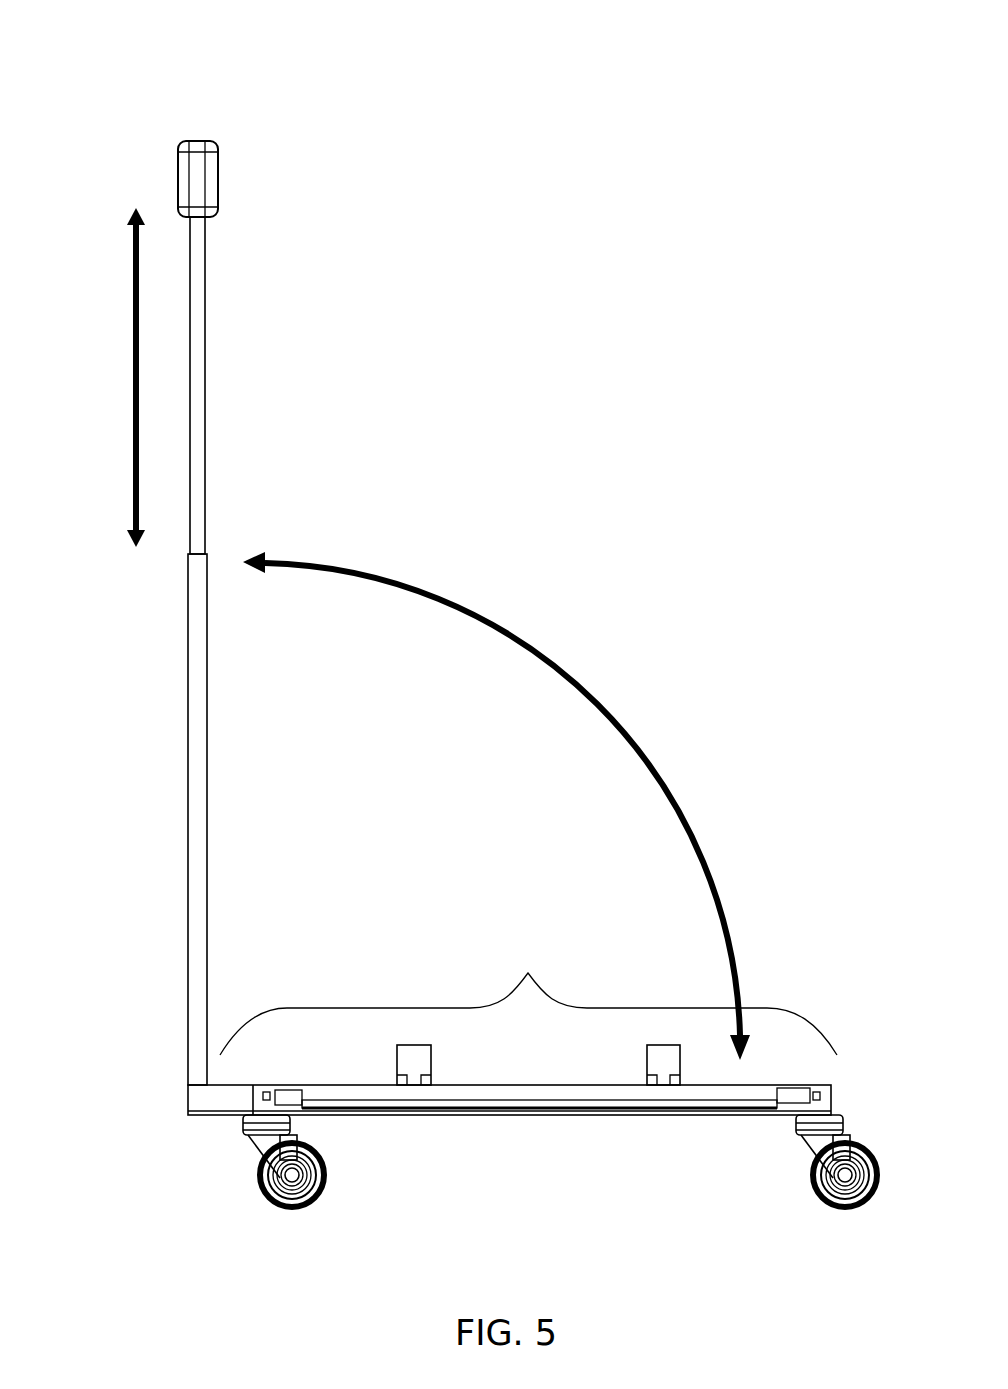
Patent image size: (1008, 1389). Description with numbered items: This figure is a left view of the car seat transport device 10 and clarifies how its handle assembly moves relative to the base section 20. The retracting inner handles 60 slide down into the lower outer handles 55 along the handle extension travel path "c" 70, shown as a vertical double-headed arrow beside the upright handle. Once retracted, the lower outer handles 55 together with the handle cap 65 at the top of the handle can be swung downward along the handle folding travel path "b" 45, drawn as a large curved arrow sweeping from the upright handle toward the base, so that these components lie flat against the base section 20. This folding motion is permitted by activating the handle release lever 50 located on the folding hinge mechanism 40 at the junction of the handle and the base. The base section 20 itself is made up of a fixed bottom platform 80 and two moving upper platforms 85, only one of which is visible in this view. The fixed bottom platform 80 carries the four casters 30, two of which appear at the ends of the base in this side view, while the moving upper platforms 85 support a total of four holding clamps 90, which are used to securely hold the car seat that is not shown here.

The car seat transport device 10 is at (126, 181).
The base section 20 is at (528, 1002).
The casters 30 is at (290, 1180).
The folding hinge mechanism 40 is at (202, 1097).
The handle folding travel path "b" 45 is at (595, 700).
The handle release lever 50 is at (262, 1103).
The lower outer handles 55 is at (200, 805).
The retracting inner handles 60 is at (199, 410).
The handle cap 65 is at (199, 190).
The handle extension travel path "c" 70 is at (135, 312).
The fixed bottom platform 80 is at (580, 1108).
The moving upper platforms 85 is at (513, 1103).
The holding clamps 90 is at (413, 1062).